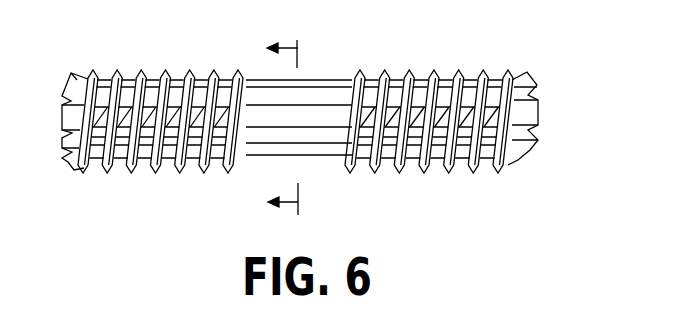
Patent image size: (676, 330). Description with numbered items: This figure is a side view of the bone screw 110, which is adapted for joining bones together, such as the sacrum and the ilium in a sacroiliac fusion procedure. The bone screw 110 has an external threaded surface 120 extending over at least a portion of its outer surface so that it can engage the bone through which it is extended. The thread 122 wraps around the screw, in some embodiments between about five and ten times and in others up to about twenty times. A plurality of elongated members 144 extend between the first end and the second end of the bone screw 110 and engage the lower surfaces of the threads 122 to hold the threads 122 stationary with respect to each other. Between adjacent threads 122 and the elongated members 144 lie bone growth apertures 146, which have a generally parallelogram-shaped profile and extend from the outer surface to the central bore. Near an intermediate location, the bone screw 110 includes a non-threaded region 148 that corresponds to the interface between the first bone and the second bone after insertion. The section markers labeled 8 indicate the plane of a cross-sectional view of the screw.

The bone screw 110 is at (312, 127).
The external threaded surface 120 is at (143, 68).
The thread 122 is at (495, 162).
The elongated members 144 is at (263, 95).
The bone growth apertures 146 is at (507, 73).
The non-threaded region 148 is at (332, 150).
The section line 8- 8 is at (294, 127).